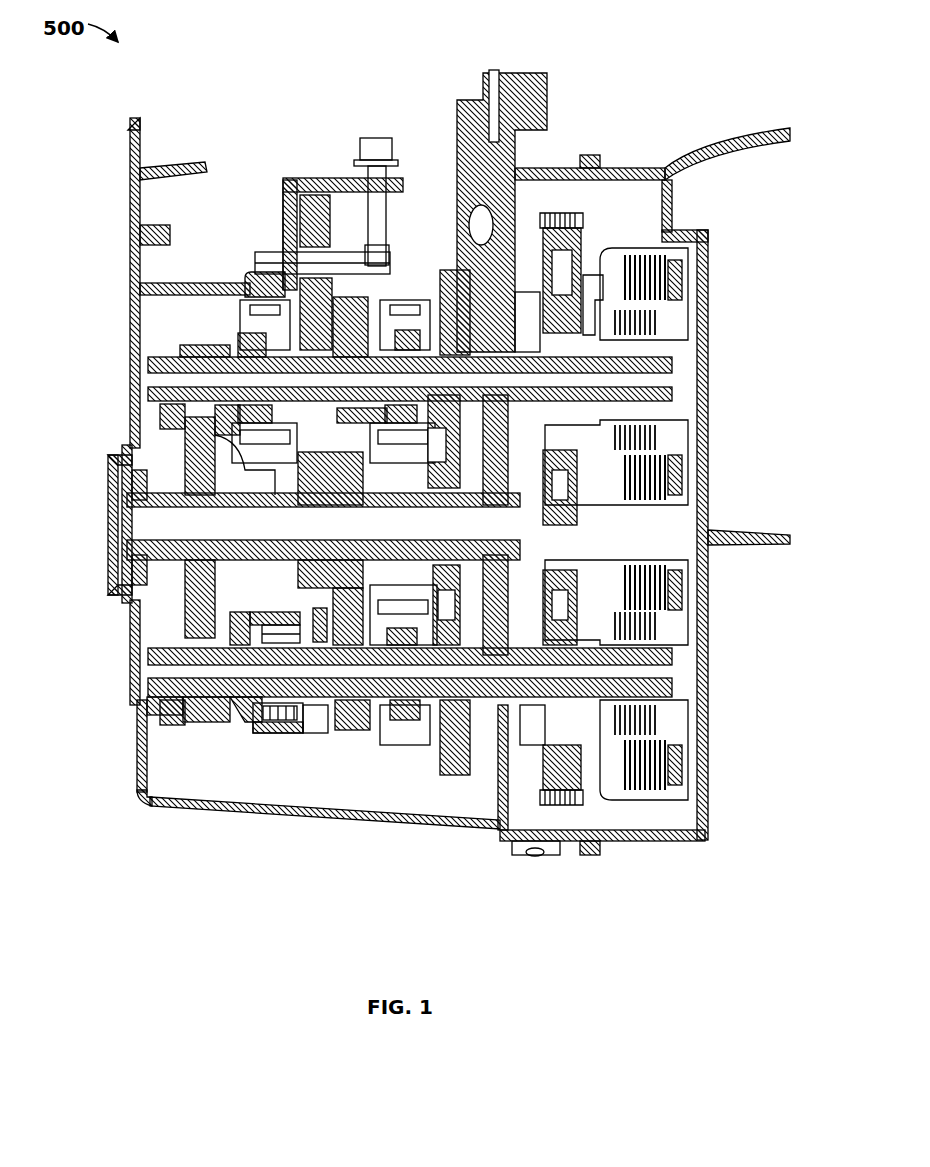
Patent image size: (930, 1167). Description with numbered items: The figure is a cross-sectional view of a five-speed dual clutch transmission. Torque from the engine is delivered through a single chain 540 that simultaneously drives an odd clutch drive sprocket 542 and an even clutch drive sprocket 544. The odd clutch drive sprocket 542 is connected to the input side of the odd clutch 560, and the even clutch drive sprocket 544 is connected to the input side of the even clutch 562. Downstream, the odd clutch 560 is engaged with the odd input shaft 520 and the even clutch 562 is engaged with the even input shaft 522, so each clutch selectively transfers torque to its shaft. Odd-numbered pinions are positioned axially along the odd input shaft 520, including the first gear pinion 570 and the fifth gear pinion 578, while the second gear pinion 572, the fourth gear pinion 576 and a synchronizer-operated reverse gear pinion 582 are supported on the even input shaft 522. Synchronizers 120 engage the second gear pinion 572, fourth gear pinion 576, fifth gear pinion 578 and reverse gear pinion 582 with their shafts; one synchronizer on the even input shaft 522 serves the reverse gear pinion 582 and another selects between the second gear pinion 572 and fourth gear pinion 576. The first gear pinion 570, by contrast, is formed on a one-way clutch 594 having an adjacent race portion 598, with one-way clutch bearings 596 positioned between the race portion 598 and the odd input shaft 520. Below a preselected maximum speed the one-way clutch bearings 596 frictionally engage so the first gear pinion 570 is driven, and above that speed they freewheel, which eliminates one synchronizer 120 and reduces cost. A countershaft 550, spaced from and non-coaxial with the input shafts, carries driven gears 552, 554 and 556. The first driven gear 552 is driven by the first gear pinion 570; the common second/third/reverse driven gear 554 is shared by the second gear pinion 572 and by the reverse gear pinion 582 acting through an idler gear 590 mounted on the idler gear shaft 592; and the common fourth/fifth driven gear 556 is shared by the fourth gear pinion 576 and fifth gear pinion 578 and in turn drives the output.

The synchronizer 120 is at (243, 303).
The odd input shaft 520 is at (148, 682).
The even input shaft 522 is at (147, 362).
The chain 540 is at (567, 220).
The odd clutch drive sprocket 542 is at (545, 750).
The even clutch drive sprocket 544 is at (578, 278).
The countershaft 550 is at (116, 493).
The first driven gear 552 is at (145, 632).
The second/third/reverse driven gear 554 is at (298, 490).
The fourth/fifth driven gear 556 is at (420, 488).
The odd clutch 560 is at (650, 800).
The even clutch 562 is at (648, 248).
The first gear pinion 570 is at (218, 722).
The second gear pinion 572 is at (312, 198).
The fourth gear pinion 576 is at (467, 283).
The fifth gear pinion 578 is at (438, 790).
The reverse gear pinion 582 is at (297, 293).
The idler gear 590 is at (316, 200).
The idler gear shaft 592 is at (283, 215).
The one-way clutch 594 is at (262, 745).
The one-way clutch bearings 596 is at (285, 735).
The race portion 598 is at (287, 755).